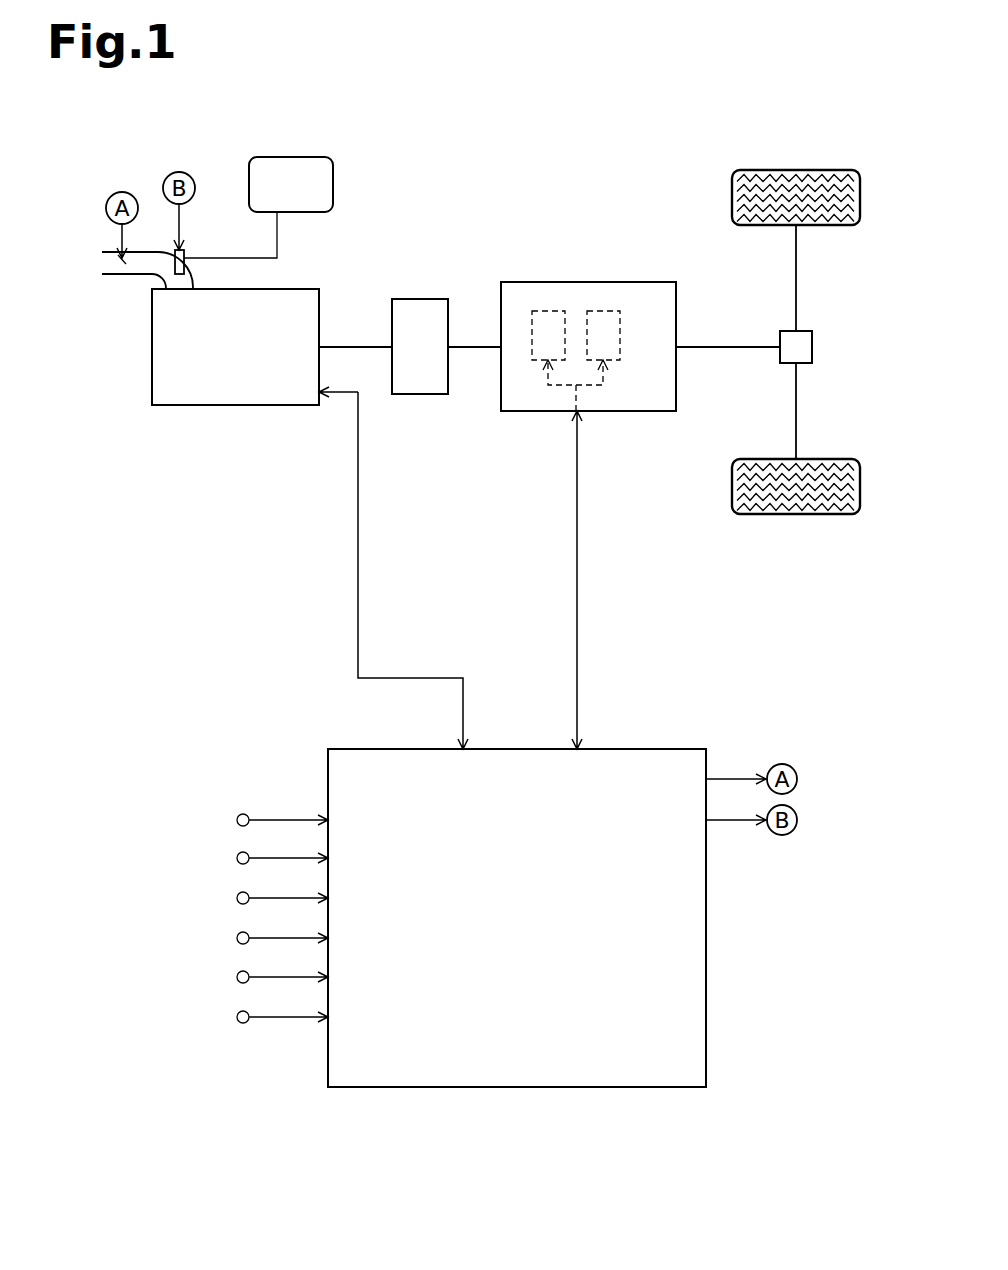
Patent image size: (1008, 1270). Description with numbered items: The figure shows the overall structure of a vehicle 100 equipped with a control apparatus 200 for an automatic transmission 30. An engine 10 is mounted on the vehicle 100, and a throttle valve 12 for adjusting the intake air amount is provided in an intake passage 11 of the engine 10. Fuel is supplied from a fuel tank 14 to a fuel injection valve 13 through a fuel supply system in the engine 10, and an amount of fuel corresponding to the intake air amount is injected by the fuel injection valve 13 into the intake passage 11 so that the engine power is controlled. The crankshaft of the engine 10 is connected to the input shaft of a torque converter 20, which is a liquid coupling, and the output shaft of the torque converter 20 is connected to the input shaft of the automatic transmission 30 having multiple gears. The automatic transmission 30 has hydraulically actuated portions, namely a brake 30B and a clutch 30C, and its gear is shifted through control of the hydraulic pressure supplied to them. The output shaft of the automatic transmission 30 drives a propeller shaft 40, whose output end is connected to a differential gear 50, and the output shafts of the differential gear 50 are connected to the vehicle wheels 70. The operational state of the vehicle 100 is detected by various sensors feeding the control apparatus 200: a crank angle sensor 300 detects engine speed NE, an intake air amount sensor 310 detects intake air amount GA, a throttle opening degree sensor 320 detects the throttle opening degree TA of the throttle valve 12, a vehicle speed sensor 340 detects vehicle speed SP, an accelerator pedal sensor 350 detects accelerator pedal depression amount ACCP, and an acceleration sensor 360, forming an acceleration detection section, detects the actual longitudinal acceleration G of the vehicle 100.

The engine 10 is at (152, 367).
The intake passage 11 is at (128, 275).
The throttle valve 12 is at (126, 268).
The fuel injection valve 13 is at (185, 265).
The fuel tank 14 is at (287, 157).
The torque converter 20 is at (420, 299).
The automatic transmission 30 is at (588, 319).
The brake 30B is at (548, 311).
The clutch 30C is at (608, 311).
The propeller shaft 40 is at (725, 345).
The differential gear 50 is at (812, 345).
The vehicle wheels 70 is at (796, 170).
The vehicle 100 is at (397, 189).
The control apparatus 200 is at (706, 915).
The crank angle sensor 300 is at (237, 820).
The intake air amount sensor 310 is at (237, 858).
The throttle opening degree sensor 320 is at (237, 898).
The vehicle speed sensor 340 is at (237, 938).
The accelerator pedal sensor 350 is at (237, 977).
The acceleration sensor 360 is at (237, 1017).